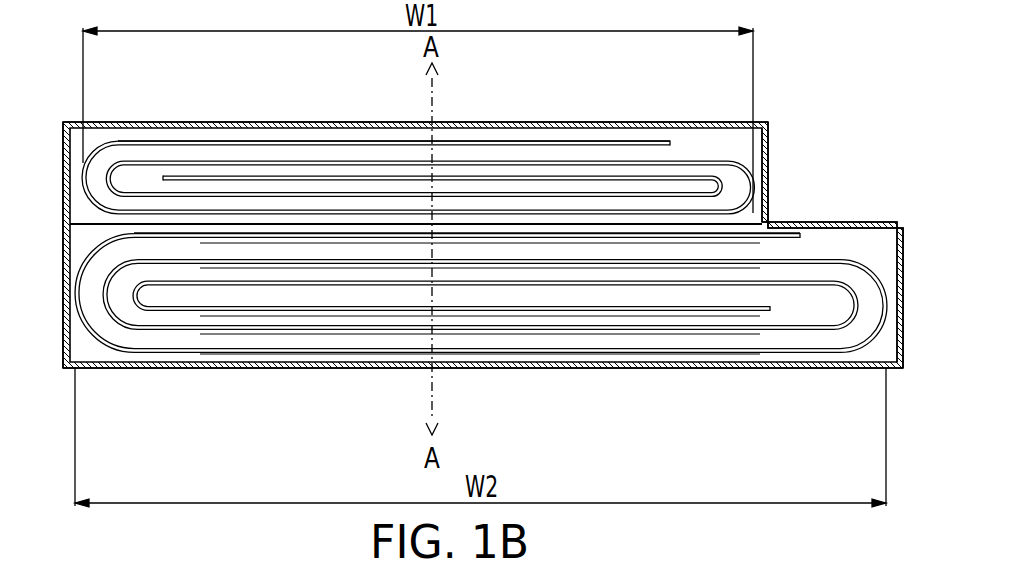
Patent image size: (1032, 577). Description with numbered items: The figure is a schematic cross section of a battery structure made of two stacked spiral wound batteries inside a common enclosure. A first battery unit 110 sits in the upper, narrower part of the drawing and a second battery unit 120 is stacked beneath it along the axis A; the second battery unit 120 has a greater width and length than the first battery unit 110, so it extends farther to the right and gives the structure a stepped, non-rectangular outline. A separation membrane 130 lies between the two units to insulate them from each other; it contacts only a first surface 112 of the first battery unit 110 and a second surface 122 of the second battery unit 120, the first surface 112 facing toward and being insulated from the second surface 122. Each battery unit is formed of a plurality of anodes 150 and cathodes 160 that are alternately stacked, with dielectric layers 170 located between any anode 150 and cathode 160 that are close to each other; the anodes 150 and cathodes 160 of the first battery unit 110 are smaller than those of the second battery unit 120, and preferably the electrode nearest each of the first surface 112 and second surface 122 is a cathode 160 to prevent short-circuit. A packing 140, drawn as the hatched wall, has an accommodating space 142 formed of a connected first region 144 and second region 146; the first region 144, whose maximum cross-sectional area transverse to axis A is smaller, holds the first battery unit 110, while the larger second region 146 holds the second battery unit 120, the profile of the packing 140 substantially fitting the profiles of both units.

The first battery unit 110 is at (714, 156).
The first surface 112 is at (63, 128).
The second battery unit 120 is at (832, 366).
The second surface 122 is at (73, 245).
The separation membrane 130 is at (65, 300).
The packing 140 is at (893, 368).
The accommodating space 142 is at (828, 245).
The first region 144 is at (742, 150).
The second region 146 is at (846, 246).
The anodes 150 is at (167, 176).
The cathodes 160 is at (675, 195).
The dielectric layers 170 is at (128, 143).